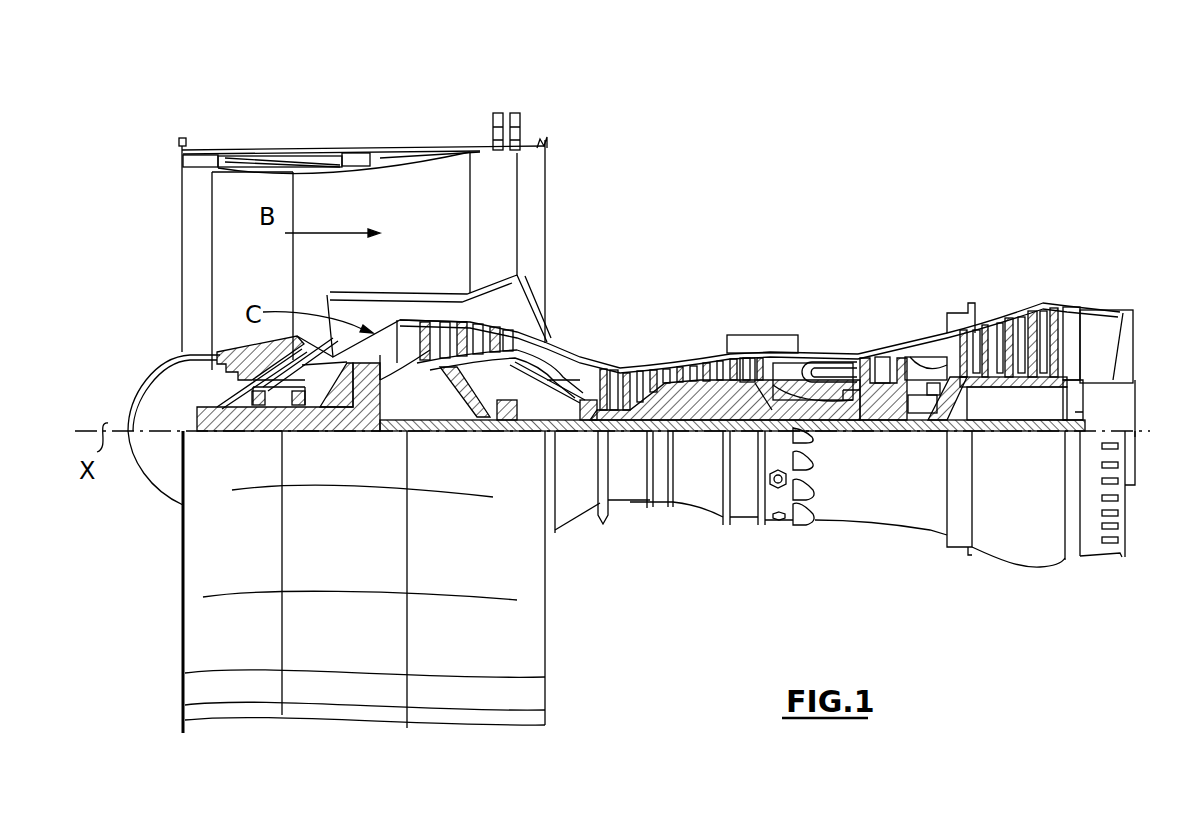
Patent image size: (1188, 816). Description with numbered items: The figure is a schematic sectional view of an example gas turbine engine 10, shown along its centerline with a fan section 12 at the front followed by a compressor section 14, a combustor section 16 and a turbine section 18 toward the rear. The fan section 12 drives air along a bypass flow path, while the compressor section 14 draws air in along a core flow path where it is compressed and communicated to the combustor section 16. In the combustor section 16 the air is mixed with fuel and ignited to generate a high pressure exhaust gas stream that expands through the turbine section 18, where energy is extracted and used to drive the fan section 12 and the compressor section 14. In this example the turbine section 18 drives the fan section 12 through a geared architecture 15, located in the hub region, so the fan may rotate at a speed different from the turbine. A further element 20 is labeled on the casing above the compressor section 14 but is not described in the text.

The gas turbine engine 10 is at (226, 116).
The fan section 12 is at (332, 138).
The compressor section 14 is at (755, 238).
The geared architecture 15 is at (363, 413).
The combustor section 16 is at (890, 238).
The turbine section 18 is at (1068, 238).
The engine component 20 is at (750, 340).